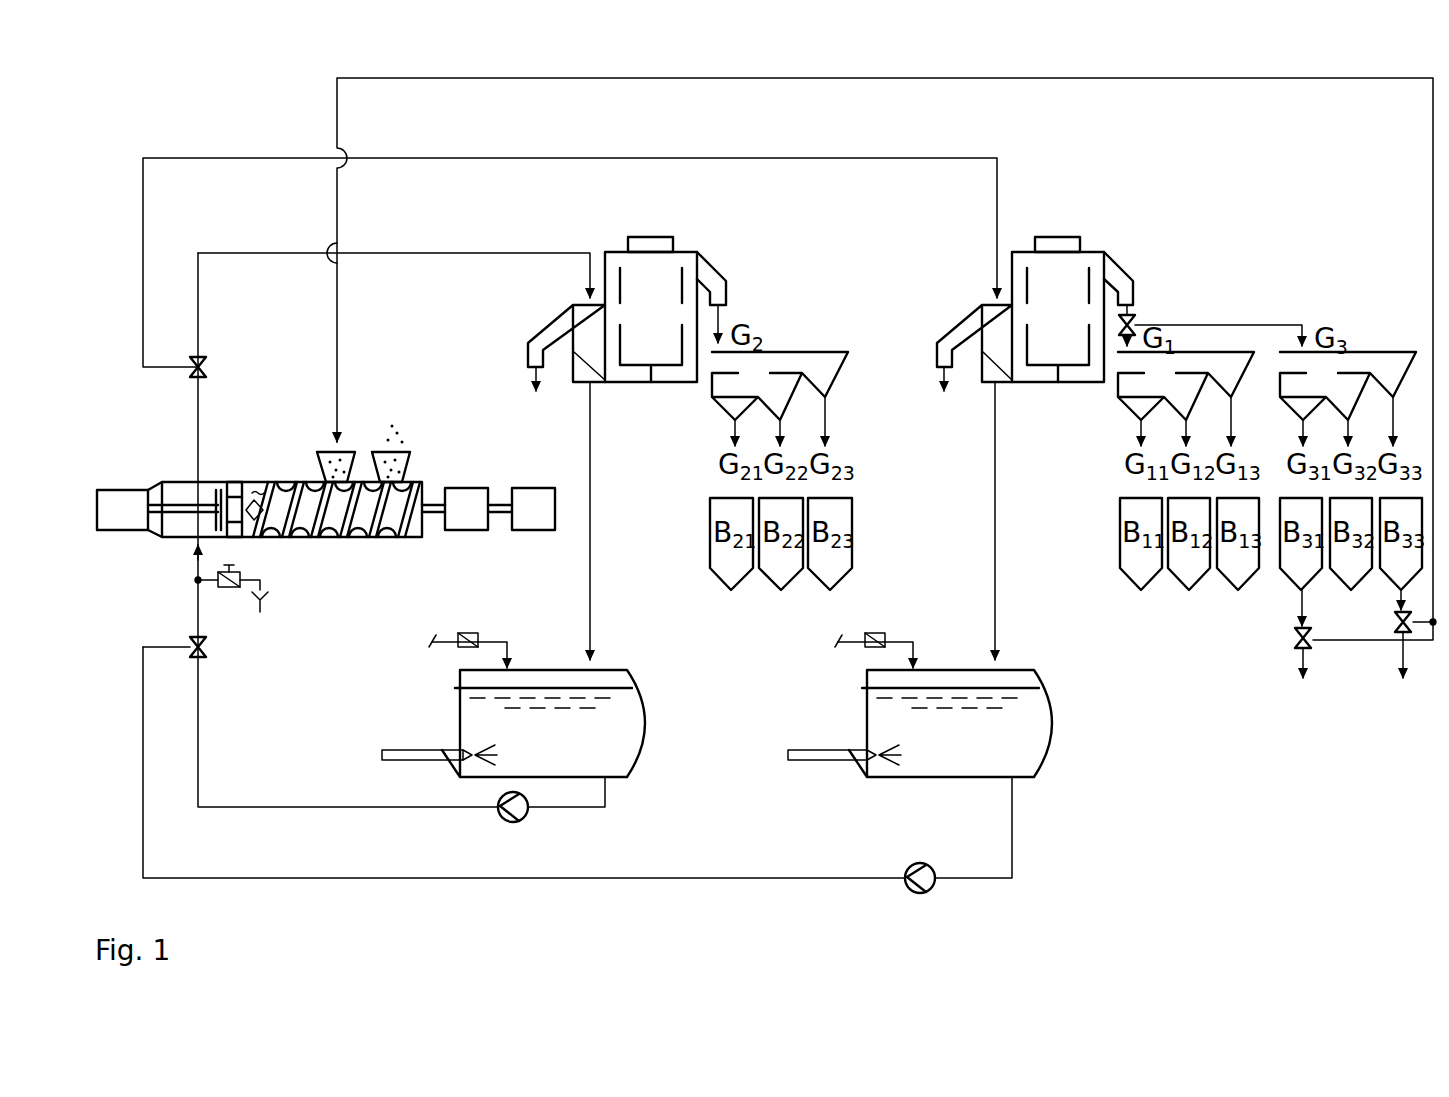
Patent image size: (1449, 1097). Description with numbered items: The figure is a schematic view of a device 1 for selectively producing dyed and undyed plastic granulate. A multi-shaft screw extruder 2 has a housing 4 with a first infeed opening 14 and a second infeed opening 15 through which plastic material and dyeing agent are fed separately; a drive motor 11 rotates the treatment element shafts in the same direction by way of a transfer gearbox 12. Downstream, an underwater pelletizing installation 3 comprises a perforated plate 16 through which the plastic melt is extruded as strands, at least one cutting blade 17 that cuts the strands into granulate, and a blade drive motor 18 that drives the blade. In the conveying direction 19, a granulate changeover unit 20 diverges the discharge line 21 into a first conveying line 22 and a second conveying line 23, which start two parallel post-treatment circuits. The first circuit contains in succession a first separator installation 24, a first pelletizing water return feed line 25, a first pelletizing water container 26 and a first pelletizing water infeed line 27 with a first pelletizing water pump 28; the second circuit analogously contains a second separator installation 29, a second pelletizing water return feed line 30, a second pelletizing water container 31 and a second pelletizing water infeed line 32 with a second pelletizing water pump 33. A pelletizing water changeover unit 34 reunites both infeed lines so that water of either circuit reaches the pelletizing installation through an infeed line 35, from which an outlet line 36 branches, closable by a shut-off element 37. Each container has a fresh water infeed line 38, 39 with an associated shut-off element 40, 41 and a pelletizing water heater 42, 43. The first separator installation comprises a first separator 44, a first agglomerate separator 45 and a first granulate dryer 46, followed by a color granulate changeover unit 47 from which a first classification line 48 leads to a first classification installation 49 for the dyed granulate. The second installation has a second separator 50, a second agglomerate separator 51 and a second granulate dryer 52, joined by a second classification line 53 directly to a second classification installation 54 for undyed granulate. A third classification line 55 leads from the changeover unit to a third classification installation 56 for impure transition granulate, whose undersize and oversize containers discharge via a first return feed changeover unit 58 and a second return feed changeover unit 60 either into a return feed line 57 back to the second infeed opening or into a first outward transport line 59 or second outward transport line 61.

The device 1 is at (193, 123).
The multi-shaft screw extruder 2 is at (430, 472).
The underwater pelletizing installation 3 is at (325, 490).
The housing 4 is at (308, 480).
The drive motor 11 is at (532, 530).
The transfer gearbox 12 is at (465, 530).
The first infeed opening 14 is at (412, 452).
The second infeed opening 15 is at (345, 452).
The perforated plate 16 is at (240, 486).
The cutting blade 17 is at (220, 480).
The blade drive motor 18 is at (125, 530).
The conveying direction 19 is at (291, 147).
The granulate changeover unit 20 is at (208, 360).
The discharge line 21 is at (210, 393).
The first conveying line 22 is at (143, 325).
The second conveying line 23 is at (253, 251).
The first separator installation 24 is at (1064, 226).
The first pelletizing water return feed line 25 is at (995, 521).
The first pelletizing water container 26 is at (860, 708).
The first pelletizing water infeed line 27 is at (737, 878).
The first pelletizing water pump 28 is at (923, 893).
The second separator installation 29 is at (708, 250).
The second pelletizing water return feed line 30 is at (588, 418).
The second pelletizing water container 31 is at (634, 740).
The second pelletizing water infeed line 32 is at (343, 807).
The second pelletizing water pump 33 is at (515, 822).
The pelletizing water changeover unit 34 is at (205, 655).
The infeed line 35 is at (197, 590).
The outlet line 36 is at (263, 585).
The shut-off element 37 is at (242, 576).
The fresh water infeed line 38 is at (911, 650).
The fresh water infeed line 39 is at (505, 650).
The shut-off element 40 is at (836, 647).
The shut-off element 41 is at (430, 647).
The pelletizing water heater 42 is at (815, 750).
The pelletizing water heater 43 is at (410, 750).
The first separator 44 is at (985, 366).
The first agglomerate separator 45 is at (960, 328).
The first granulate dryer 46 is at (1087, 262).
The color granulate changeover unit 47 is at (1133, 314).
The first classification line 48 is at (1121, 342).
The first classification installation 49 is at (1135, 398).
The second separator 50 is at (582, 368).
The second agglomerate separator 51 is at (560, 330).
The second granulate dryer 52 is at (690, 268).
The second classification line 53 is at (722, 310).
The second classification installation 54 is at (712, 378).
The third classification line 55 is at (1200, 322).
The third classification installation 56 is at (1366, 360).
The return feed line 57 is at (1288, 78).
The first return feed changeover unit 58 is at (1292, 640).
The first outward transport line 59 is at (1310, 660).
The second return feed changeover unit 60 is at (1394, 624).
The second outward transport line 61 is at (1412, 660).